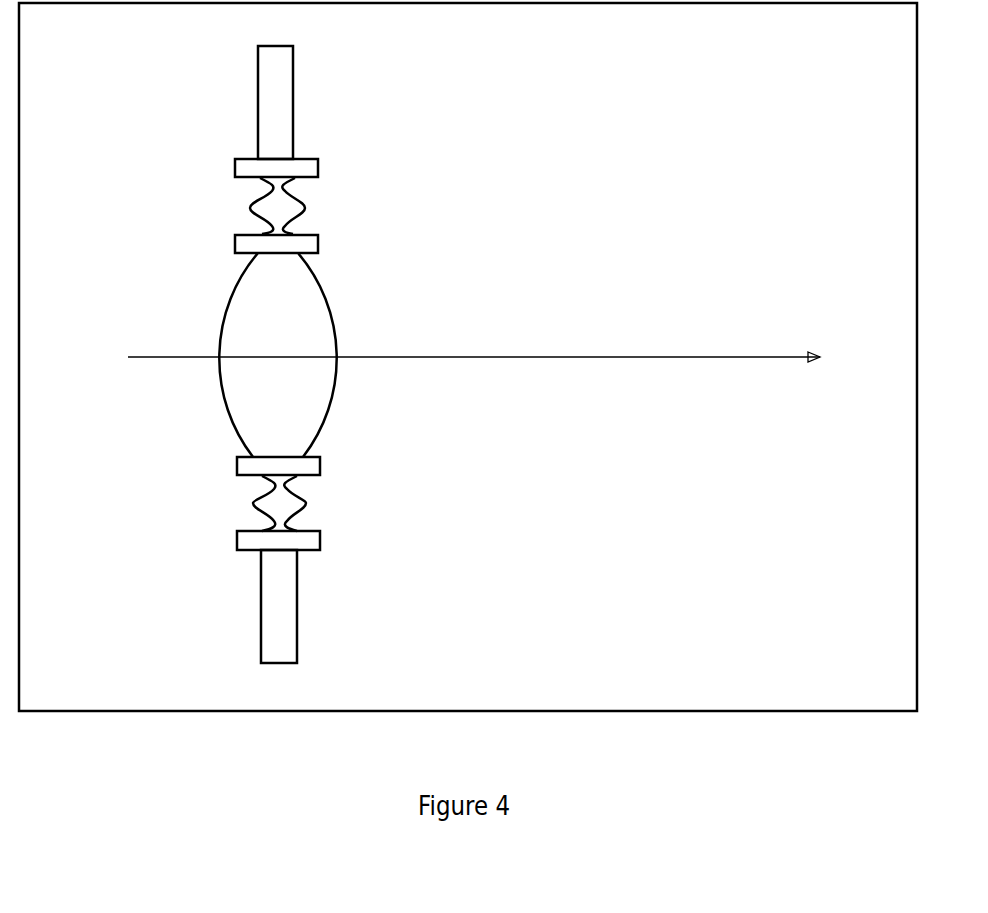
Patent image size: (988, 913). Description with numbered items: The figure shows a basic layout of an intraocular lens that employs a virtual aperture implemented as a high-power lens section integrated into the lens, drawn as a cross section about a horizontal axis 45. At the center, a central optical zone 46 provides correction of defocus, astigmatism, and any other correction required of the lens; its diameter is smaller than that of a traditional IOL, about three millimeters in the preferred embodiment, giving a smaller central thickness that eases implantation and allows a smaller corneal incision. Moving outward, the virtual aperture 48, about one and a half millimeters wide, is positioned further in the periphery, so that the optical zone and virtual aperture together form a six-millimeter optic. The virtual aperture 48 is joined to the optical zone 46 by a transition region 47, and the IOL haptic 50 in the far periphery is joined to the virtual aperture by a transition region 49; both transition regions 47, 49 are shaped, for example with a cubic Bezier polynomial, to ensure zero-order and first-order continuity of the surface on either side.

The optical axis 45 is at (474, 344).
The central optical zone 46 is at (340, 318).
The transition region 47 is at (330, 242).
The virtual aperture 48 is at (310, 203).
The transition region 49 is at (329, 172).
The IOL haptic 50 is at (305, 96).